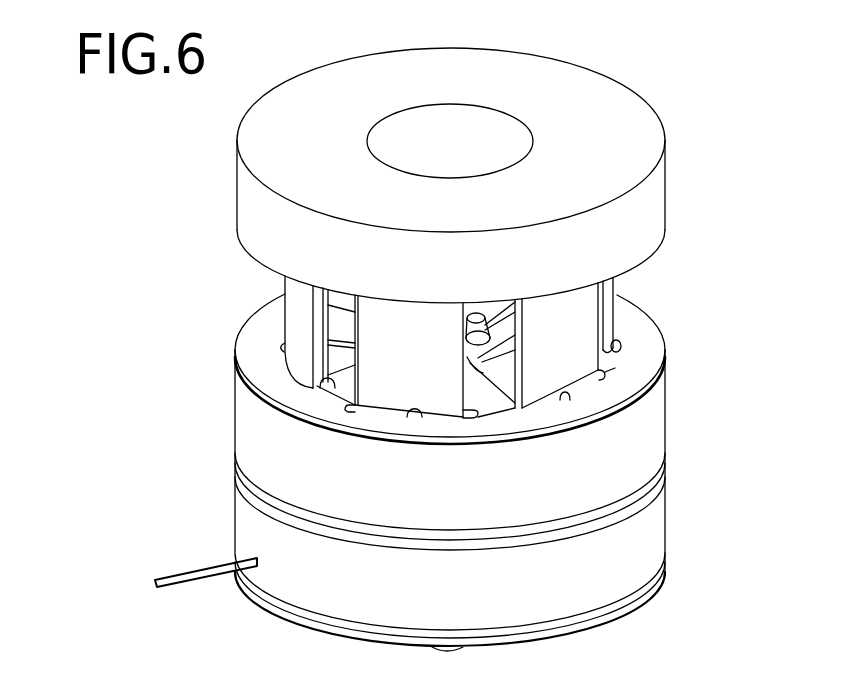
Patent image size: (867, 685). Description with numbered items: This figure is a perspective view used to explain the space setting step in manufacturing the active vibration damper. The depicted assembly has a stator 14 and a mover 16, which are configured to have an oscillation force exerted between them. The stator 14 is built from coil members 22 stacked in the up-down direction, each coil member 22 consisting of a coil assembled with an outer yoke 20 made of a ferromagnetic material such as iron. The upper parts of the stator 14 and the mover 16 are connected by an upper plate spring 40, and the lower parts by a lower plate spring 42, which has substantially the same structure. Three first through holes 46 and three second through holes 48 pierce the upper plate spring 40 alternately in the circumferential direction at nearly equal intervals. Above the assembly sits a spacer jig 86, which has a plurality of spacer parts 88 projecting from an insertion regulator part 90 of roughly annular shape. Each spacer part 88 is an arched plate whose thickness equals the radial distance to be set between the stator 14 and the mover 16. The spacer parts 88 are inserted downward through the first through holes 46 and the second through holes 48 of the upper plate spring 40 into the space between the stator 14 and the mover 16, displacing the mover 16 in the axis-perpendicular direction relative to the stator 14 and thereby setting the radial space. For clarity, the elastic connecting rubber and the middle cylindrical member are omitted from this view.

The stator 14 is at (503, 484).
The mover 16 is at (342, 360).
The outer yoke 20 is at (248, 420).
The coil member 22 is at (666, 418).
The upper plate spring 40 is at (252, 353).
The lower plate spring 42 is at (273, 603).
The first through hole 46 is at (325, 385).
The second through hole 48 is at (418, 412).
The spacer jig 86 is at (641, 86).
The spacer part 88 is at (300, 350).
The insertion regulator part 90 is at (634, 225).